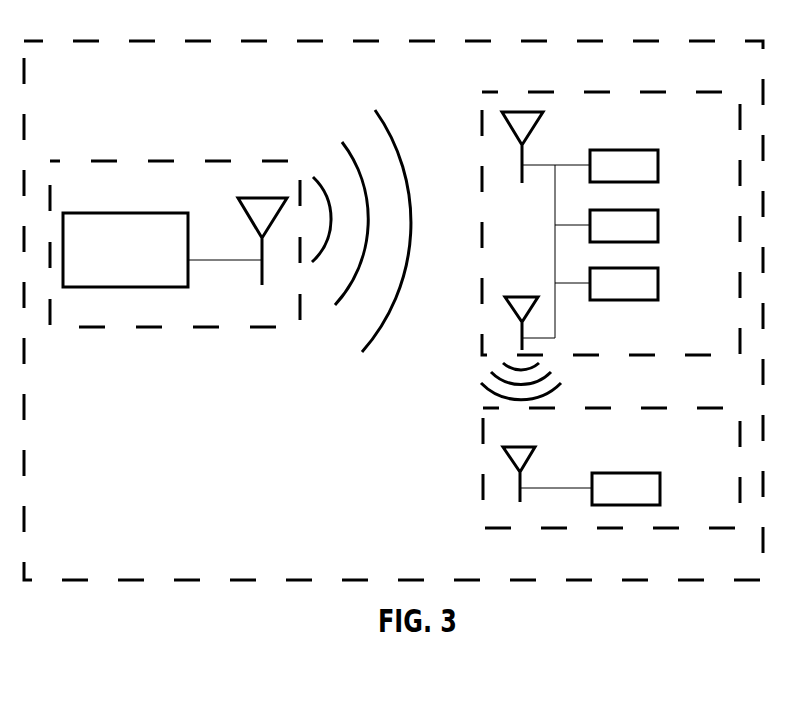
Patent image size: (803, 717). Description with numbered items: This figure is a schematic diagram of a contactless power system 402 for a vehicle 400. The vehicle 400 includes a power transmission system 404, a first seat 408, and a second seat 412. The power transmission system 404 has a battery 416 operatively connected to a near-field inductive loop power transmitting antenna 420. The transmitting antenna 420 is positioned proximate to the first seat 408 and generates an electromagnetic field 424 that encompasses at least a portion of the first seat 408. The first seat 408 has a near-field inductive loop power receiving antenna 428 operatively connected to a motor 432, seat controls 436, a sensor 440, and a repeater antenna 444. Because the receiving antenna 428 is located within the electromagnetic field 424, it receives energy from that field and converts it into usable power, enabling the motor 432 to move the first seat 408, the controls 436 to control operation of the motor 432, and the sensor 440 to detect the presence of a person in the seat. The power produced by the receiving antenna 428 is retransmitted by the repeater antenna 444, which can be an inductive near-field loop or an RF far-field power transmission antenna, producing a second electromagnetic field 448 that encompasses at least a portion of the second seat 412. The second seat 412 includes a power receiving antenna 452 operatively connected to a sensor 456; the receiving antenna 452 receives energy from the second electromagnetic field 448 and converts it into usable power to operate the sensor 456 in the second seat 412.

The vehicle 400 is at (652, 41).
The contactless power system 402 is at (318, 436).
The power transmission system 404 is at (100, 331).
The first seat 408 is at (505, 90).
The second seat 412 is at (490, 531).
The battery 416 is at (155, 213).
The near-field inductive loop power transmitting antenna 420 is at (268, 197).
The electromagnetic field 424 is at (329, 130).
The near-field inductive loop power receiving antenna 428 is at (538, 124).
The motor 432 is at (652, 150).
The seat controls 436 is at (652, 210).
The sensor 440 is at (652, 268).
The repeater antenna 444 is at (510, 296).
The second electromagnetic field 448 is at (470, 366).
The power receiving antenna 452 is at (536, 446).
The sensor 456 is at (652, 473).